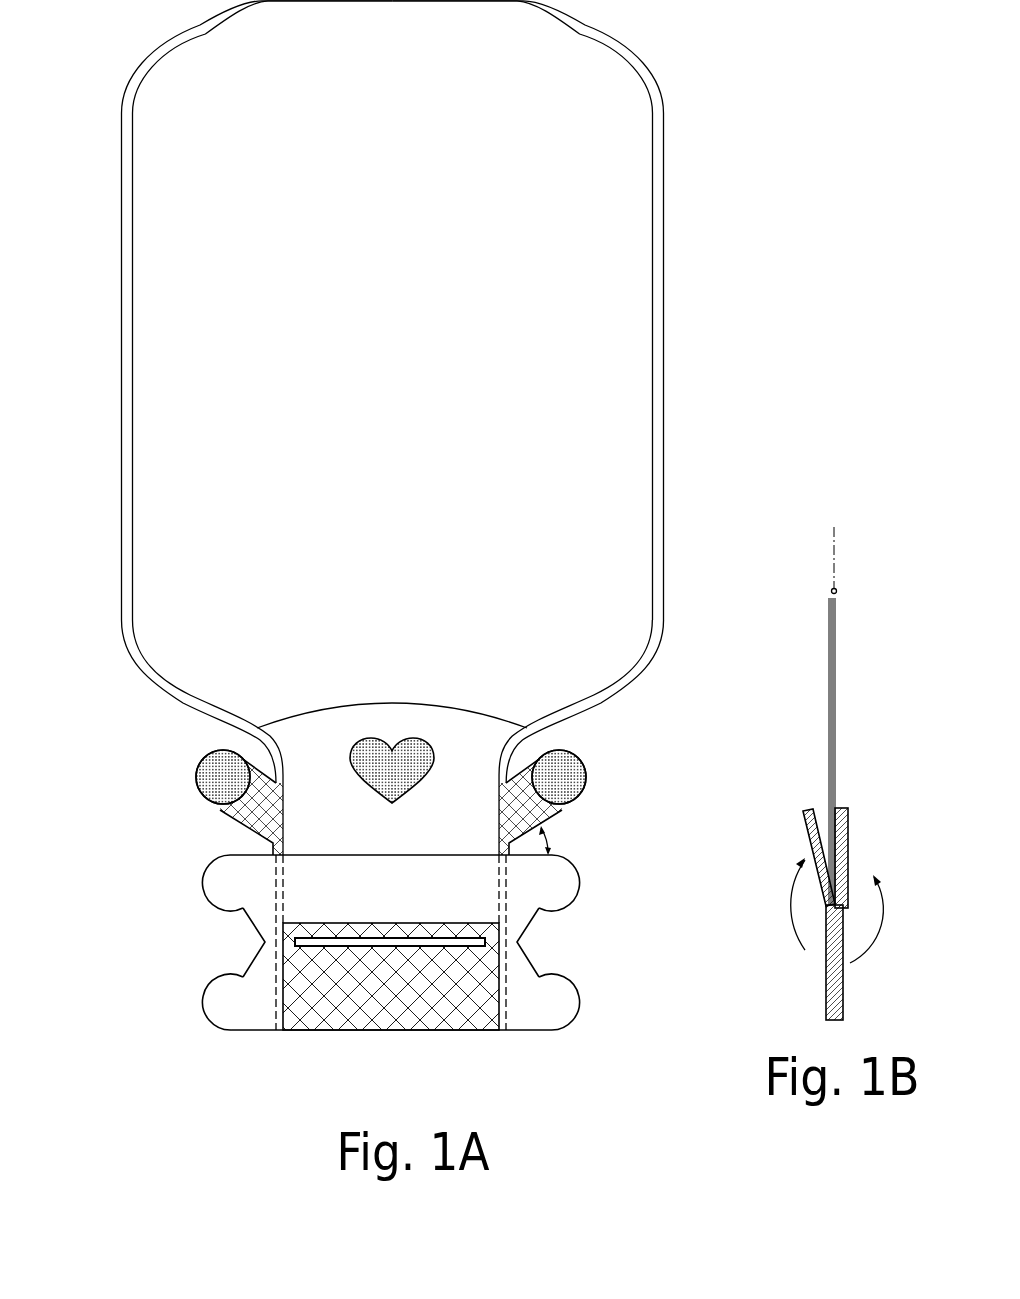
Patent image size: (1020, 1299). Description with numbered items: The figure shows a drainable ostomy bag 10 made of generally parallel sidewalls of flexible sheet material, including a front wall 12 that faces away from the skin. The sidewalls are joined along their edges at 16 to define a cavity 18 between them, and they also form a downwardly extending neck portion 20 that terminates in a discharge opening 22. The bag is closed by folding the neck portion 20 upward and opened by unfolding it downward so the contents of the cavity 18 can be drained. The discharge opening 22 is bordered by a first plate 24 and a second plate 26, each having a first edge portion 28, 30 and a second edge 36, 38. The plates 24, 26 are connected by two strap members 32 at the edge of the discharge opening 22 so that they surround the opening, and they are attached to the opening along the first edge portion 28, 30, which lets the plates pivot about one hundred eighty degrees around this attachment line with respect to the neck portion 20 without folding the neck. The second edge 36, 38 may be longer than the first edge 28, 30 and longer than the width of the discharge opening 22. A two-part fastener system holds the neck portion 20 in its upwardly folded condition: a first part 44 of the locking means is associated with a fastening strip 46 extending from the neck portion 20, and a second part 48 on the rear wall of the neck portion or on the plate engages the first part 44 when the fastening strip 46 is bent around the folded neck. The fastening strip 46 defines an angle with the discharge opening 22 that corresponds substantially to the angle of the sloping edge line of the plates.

In FIG. 1A, the drainable ostomy bag 10 is at (409, 555).
In FIG. 1A, the front wall 12 is at (345, 428).
In FIG. 1A, the joined edges 16 is at (132, 377).
In FIG. 1A, the cavity 18 is at (396, 330).
In FIG. 1B, the cavity 18 is at (845, 674).
In FIG. 1A, the neck portion 20 is at (392, 771).
In FIG. 1A, the discharge opening 22 is at (375, 978).
In FIG. 1A, the first plate 24 is at (391, 942).
In FIG. 1B, the first plate 24 is at (844, 796).
In FIG. 1A, the second plate 26 is at (391, 976).
In FIG. 1B, the second plate 26 is at (807, 796).
In FIG. 1A, the first edge portion 28 is at (328, 938).
In FIG. 1A, the first edge portion 30 is at (365, 947).
In FIG. 1A, the strap members 32 is at (515, 936).
In FIG. 1A, the second edge 36 is at (223, 847).
In FIG. 1A, the second edge 38 is at (285, 1032).
In FIG. 1A, the first part of locking means 44 is at (215, 777).
In FIG. 1A, the fastening strip 46 is at (252, 807).
In FIG. 1A, the second part of locking means 48 is at (363, 742).